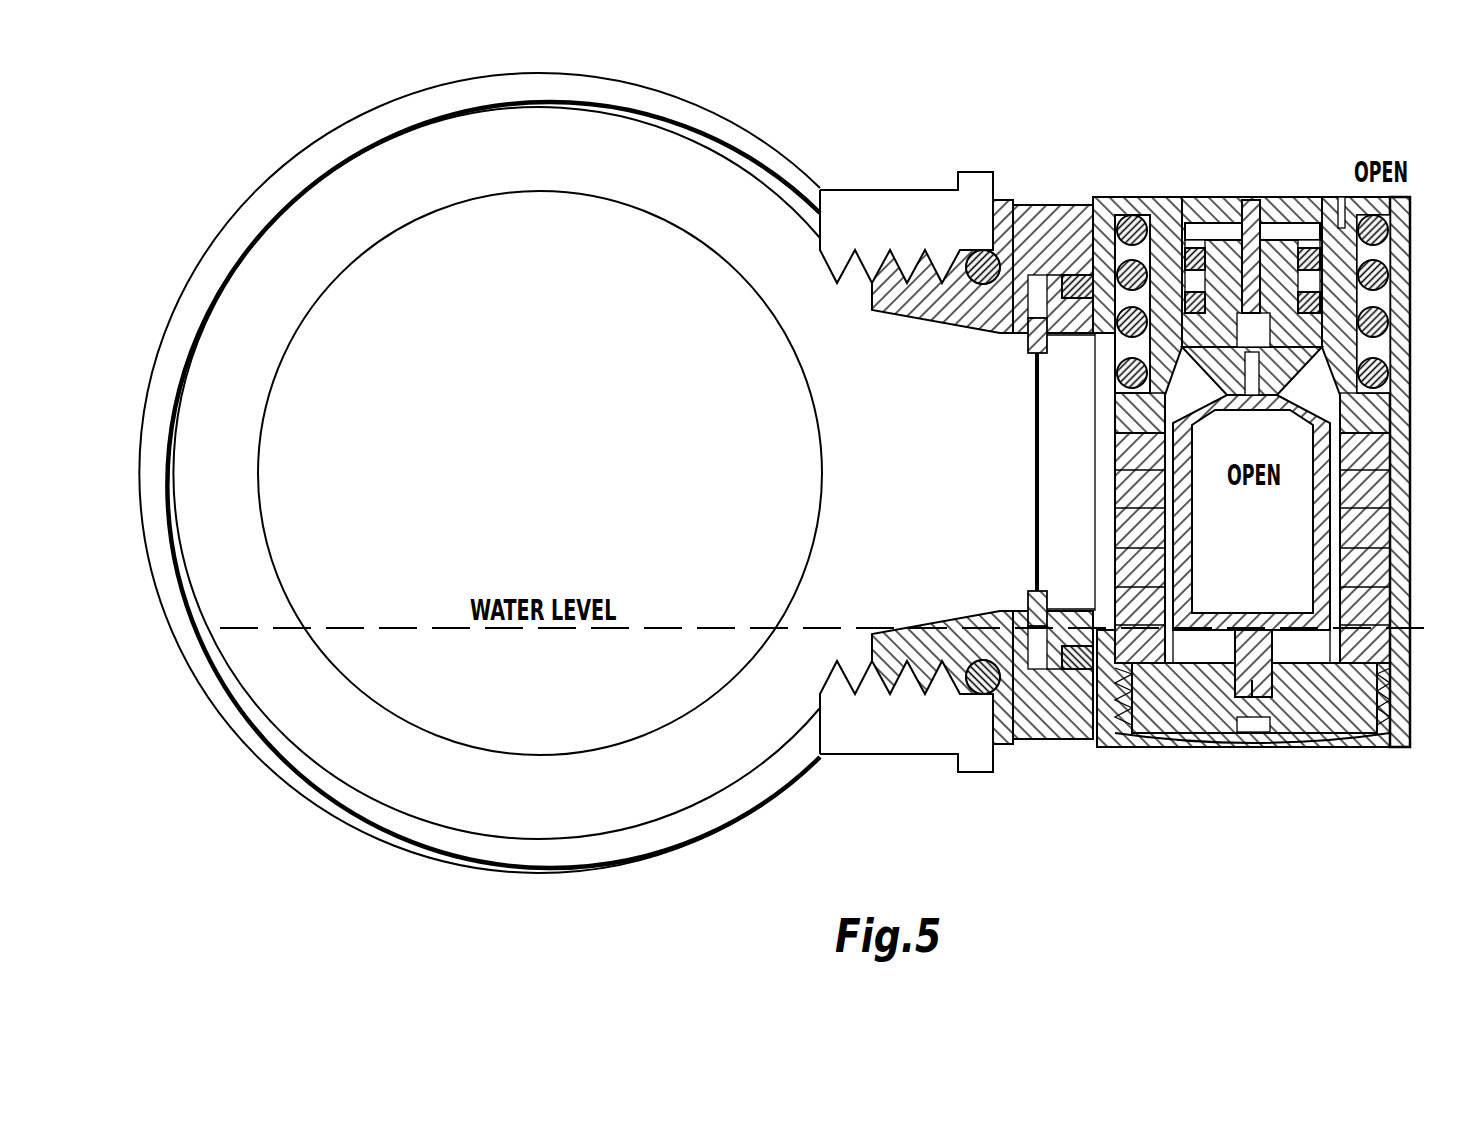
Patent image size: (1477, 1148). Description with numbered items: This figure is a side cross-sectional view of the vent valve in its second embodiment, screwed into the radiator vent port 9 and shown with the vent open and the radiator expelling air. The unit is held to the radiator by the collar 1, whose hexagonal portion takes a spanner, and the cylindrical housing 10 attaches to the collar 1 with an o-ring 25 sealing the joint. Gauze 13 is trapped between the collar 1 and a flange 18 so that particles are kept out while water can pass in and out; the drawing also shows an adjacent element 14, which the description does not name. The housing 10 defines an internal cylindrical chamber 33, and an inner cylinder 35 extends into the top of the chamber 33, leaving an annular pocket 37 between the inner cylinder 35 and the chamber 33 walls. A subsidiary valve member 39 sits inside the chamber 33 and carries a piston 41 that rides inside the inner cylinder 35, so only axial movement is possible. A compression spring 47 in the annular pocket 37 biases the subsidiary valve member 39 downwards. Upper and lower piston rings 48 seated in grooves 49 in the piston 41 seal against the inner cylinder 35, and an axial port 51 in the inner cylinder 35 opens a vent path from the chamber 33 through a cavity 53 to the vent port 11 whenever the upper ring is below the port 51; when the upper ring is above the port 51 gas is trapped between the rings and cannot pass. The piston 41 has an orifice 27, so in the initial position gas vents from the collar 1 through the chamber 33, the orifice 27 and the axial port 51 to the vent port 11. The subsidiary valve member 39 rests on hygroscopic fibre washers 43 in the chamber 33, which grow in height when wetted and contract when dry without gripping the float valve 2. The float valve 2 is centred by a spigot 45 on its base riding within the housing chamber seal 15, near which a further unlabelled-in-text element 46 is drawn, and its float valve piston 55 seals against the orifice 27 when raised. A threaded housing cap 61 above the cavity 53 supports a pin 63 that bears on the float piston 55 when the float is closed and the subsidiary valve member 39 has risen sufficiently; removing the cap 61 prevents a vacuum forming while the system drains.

The collar 1 is at (1022, 742).
The float valve 2 is at (1322, 567).
The radiator vent port 9 is at (770, 770).
The housing 10 is at (1400, 712).
The vent port 11 is at (1380, 208).
The gauze 13 is at (1033, 403).
The sleeve 14 is at (1117, 350).
The housing chamber seal 15 is at (1340, 713).
The flange 18 is at (1028, 632).
The o-ring 25 is at (1080, 662).
The orifice 27 is at (1323, 345).
The chamber 33 is at (1317, 647).
The inner cylinder 35 is at (1175, 210).
The annular pocket 37 is at (1087, 212).
The subsidiary valve member 39 is at (1372, 417).
The piston 41 is at (1215, 235).
The hygroscopic fibre washers 43 is at (1130, 493).
The spigot 45 is at (1253, 690).
The pin hole 46 is at (1240, 698).
The compression spring 47 is at (1393, 233).
The piston rings 48 is at (1320, 302).
The grooves 49 is at (1150, 232).
The axial port 51 is at (1393, 270).
The cavity 53 is at (1235, 228).
The float valve piston 55 is at (1252, 380).
The housing cap 61 is at (1303, 215).
The pin 63 is at (1288, 232).